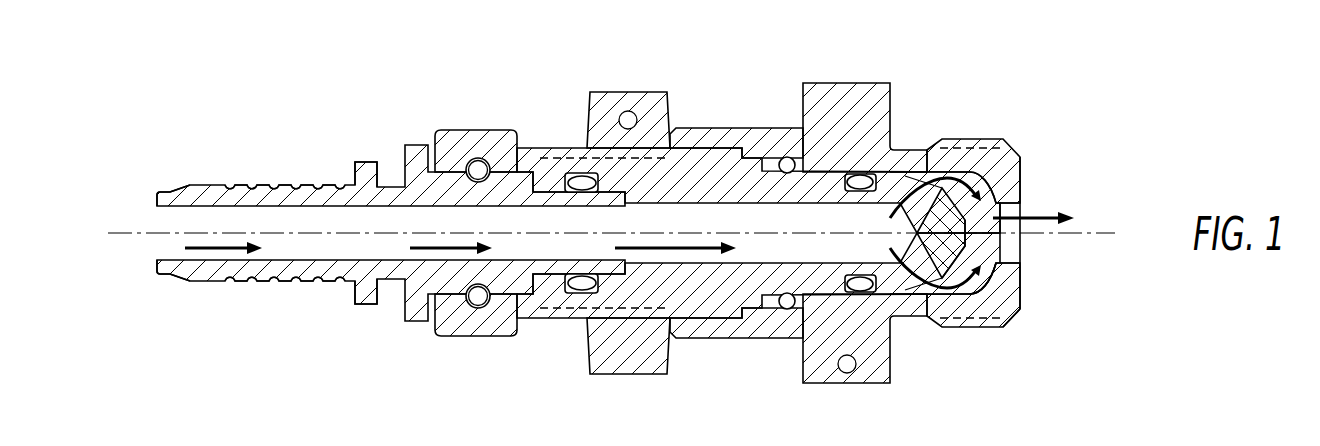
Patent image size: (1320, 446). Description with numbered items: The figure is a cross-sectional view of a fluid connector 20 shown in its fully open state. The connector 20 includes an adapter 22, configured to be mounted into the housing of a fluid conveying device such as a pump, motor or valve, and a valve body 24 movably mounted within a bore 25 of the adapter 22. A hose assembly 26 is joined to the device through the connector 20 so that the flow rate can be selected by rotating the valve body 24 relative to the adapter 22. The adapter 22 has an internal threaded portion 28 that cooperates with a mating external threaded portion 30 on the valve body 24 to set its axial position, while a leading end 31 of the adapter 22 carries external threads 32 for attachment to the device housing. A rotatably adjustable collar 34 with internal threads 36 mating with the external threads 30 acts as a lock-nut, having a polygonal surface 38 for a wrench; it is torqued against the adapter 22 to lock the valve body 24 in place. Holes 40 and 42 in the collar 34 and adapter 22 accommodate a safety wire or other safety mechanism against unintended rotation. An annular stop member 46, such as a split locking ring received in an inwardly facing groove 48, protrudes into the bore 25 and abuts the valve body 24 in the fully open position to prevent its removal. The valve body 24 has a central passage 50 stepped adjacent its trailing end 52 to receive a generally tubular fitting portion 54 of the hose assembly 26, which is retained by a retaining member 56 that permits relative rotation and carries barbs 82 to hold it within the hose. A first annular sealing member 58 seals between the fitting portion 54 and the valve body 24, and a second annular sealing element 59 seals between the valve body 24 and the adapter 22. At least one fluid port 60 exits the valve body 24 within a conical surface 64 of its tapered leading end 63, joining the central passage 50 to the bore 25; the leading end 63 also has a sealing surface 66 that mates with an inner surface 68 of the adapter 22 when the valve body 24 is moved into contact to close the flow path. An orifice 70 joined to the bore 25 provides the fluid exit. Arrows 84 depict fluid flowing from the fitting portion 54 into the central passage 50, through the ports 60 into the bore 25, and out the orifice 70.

The fluid connector 20 is at (824, 52).
The adapter 22 is at (895, 104).
The valve body 24 is at (540, 322).
The bore 25 is at (1023, 309).
The hose assembly 26 is at (360, 310).
The internal threaded portion 28 is at (693, 306).
The external threaded portion 30 is at (560, 143).
The leading end 31 is at (1023, 180).
The external threads 32 is at (987, 142).
The collar 34 is at (658, 362).
The internal threads 36 is at (643, 152).
The polygonal surface 38 is at (600, 92).
The hole 40 is at (628, 111).
The hole 42 is at (856, 366).
The annular stop member 46 is at (784, 157).
The inwardly facing groove 48 is at (786, 309).
The central passage 50 is at (762, 245).
The trailing end 52 is at (435, 138).
The fitting portion 54 is at (220, 273).
The retaining member 56 is at (476, 166).
The first annular sealing member 58 is at (580, 290).
The second annular sealing element 59 is at (898, 171).
The fluid port 60 is at (918, 184).
The leading end 63 is at (1010, 241).
The conical surface 64 is at (921, 292).
The sealing surface 66 is at (1004, 170).
The inner surface 68 is at (1003, 204).
The orifice 70 is at (1012, 253).
The barbs 82 is at (303, 281).
The arrows 84 is at (218, 248).